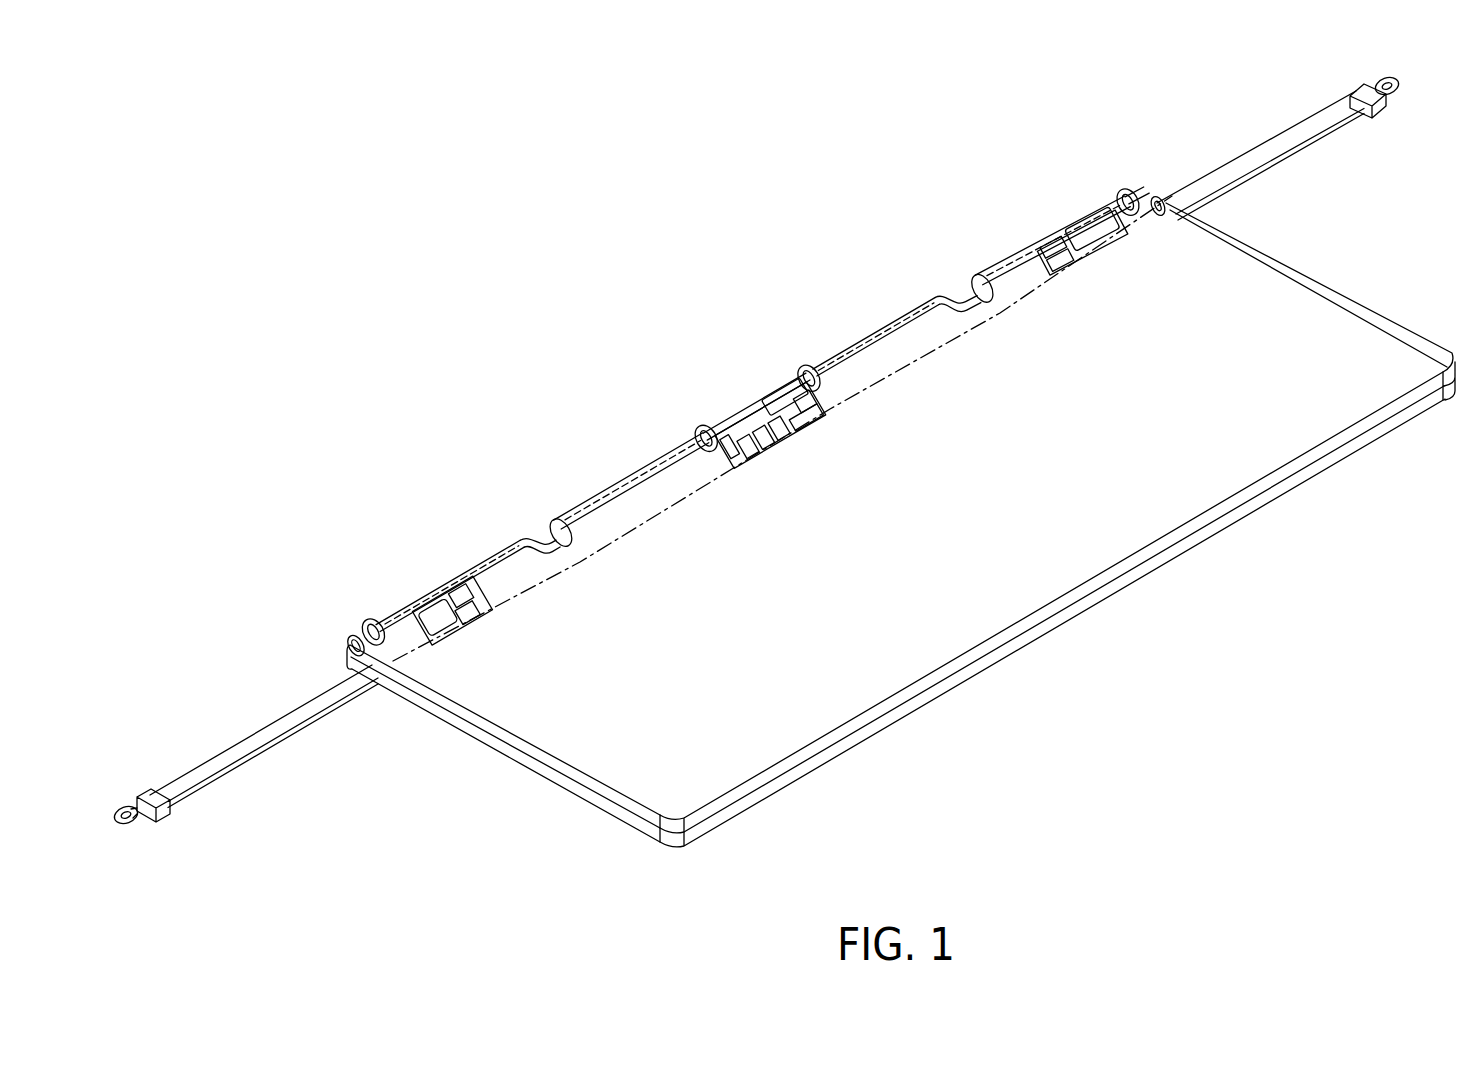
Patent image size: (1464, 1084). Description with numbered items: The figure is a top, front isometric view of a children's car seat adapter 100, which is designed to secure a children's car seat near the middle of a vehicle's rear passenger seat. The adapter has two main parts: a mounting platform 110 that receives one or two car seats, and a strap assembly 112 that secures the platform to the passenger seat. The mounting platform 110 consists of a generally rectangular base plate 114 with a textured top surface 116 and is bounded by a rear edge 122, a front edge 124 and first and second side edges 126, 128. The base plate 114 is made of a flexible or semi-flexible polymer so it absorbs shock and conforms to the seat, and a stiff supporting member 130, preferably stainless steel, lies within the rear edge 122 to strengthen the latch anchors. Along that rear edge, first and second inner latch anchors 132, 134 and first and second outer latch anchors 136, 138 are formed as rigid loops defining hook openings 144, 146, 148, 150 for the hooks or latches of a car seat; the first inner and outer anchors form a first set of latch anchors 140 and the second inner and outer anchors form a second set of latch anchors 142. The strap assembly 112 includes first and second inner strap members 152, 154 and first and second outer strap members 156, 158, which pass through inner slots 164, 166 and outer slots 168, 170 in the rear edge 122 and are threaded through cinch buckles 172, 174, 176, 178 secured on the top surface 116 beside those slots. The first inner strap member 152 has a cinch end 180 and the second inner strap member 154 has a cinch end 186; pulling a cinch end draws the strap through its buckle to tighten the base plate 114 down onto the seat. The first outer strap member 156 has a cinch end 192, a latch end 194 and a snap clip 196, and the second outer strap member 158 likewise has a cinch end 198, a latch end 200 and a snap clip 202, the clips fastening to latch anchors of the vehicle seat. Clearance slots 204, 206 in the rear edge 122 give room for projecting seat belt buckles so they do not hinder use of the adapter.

The car seat adapter 100 is at (553, 243).
The mounting platform 110 is at (1105, 668).
The strap assembly 112 is at (241, 712).
The base plate 114 is at (812, 774).
The top surface 116 is at (1368, 360).
The rear edge 122 is at (624, 478).
The front edge 124 is at (1180, 542).
The first side edge 126 is at (534, 748).
The second side edge 128 is at (1303, 278).
The supporting member 130 is at (900, 352).
The first inner latch anchor 132 is at (697, 436).
The second inner latch anchor 134 is at (808, 368).
The first outer latch anchor 136 is at (373, 626).
The second outer latch anchor 138 is at (1138, 185).
The first set of latch anchors 140 is at (430, 520).
The second set of latch anchors 142 is at (1000, 152).
The hook opening 144 is at (700, 450).
The hook opening 146 is at (813, 401).
The hook opening 148 is at (352, 647).
The hook opening 150 is at (1158, 203).
The first inner strap member 152 is at (706, 408).
The second inner strap member 154 is at (771, 371).
The first outer strap member 156 is at (274, 760).
The second outer strap member 158 is at (1289, 168).
The inner slot 164 is at (760, 448).
The inner slot 166 is at (815, 421).
The outer slot 168 is at (483, 604).
The outer slot 170 is at (1046, 243).
The cinch buckle 172 is at (768, 444).
The cinch buckle 174 is at (791, 431).
The cinch buckle 176 is at (468, 611).
The cinch buckle 178 is at (1057, 260).
The cinch end 180 is at (728, 446).
The cinch end 186 is at (792, 398).
The cinch end 192 is at (426, 607).
The latch end 194 is at (180, 789).
The snap clip 196 is at (118, 824).
The cinch end 198 is at (1092, 230).
The latch end 200 is at (1347, 104).
The snap clip 202 is at (1392, 78).
The clearance slot 204 is at (532, 538).
The clearance slot 206 is at (955, 287).